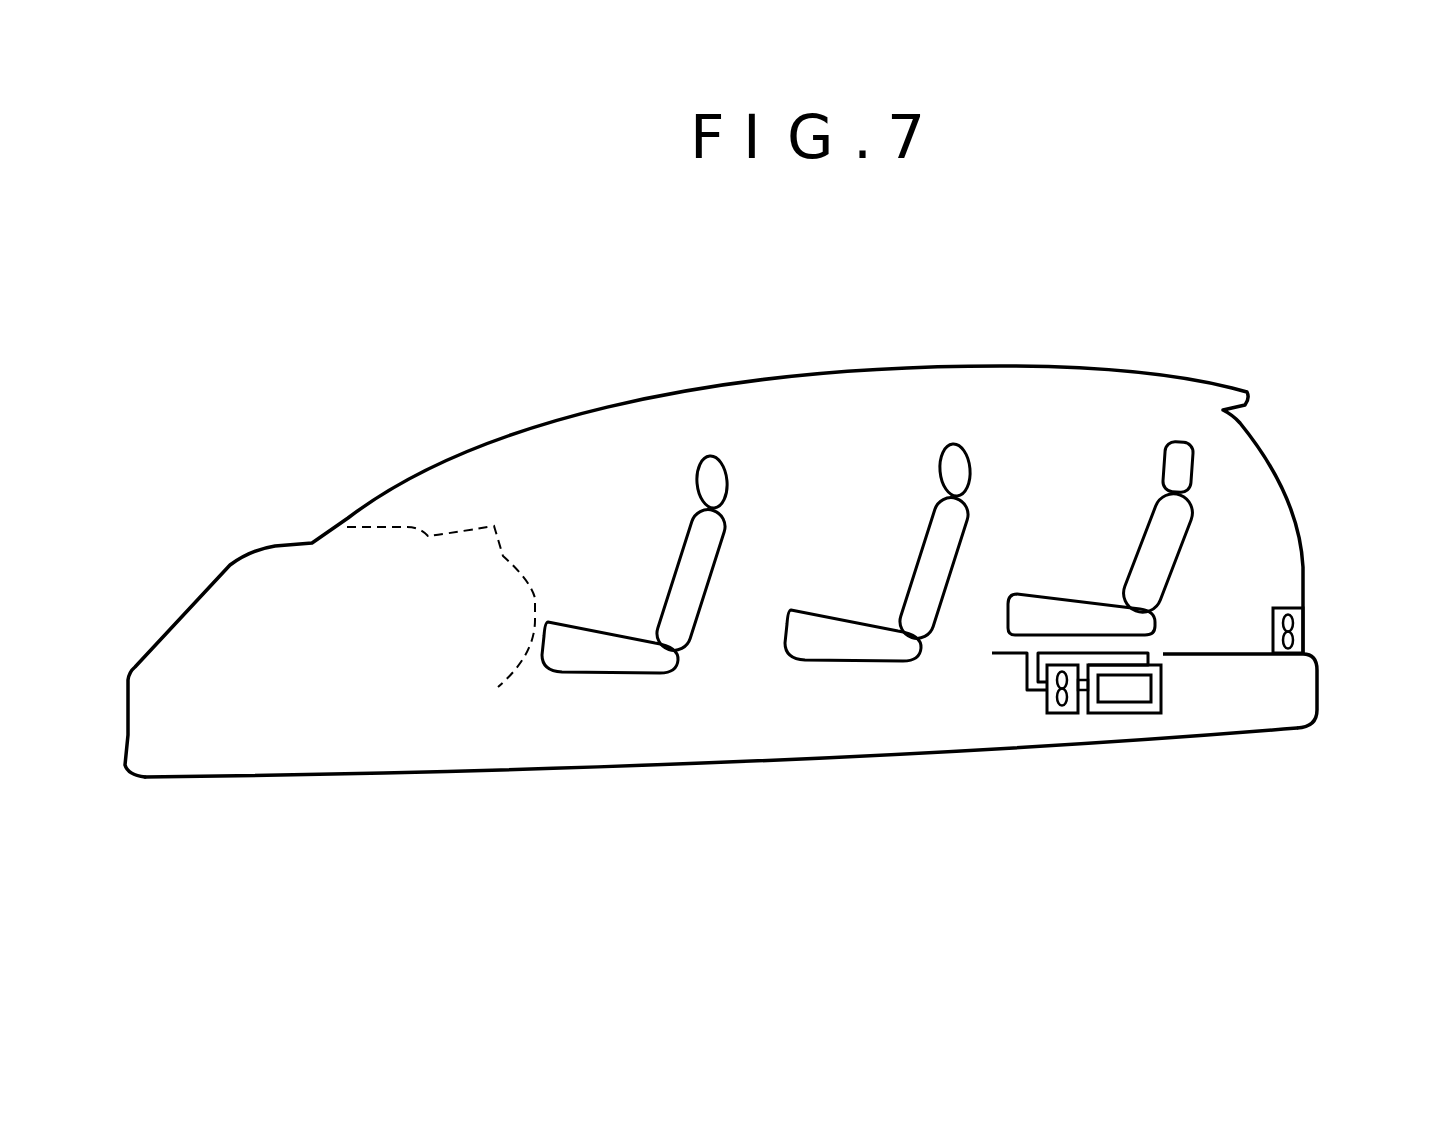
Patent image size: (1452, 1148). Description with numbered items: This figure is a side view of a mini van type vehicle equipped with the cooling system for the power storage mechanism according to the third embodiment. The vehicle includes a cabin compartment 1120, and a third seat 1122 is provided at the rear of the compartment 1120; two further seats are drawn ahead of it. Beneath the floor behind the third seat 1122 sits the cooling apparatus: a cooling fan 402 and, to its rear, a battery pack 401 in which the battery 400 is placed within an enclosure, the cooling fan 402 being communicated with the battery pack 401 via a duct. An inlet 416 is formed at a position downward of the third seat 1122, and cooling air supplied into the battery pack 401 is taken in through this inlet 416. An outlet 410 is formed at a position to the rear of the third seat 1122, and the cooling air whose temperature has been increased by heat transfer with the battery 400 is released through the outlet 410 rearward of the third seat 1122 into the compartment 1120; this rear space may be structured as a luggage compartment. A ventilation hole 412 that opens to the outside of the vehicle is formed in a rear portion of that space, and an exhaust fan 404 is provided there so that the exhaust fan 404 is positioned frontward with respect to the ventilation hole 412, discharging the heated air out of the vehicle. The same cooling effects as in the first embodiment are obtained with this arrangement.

The cabin compartment 1120 is at (1070, 429).
The third seat 1122 is at (1138, 541).
The battery 400 is at (1162, 700).
The battery pack 401 is at (1103, 713).
The cooling fan 402 is at (1062, 713).
The exhaust fan 404 is at (1273, 657).
The outlet 410 is at (1157, 648).
The ventilation hole 412 is at (1304, 632).
The inlet 416 is at (1028, 652).